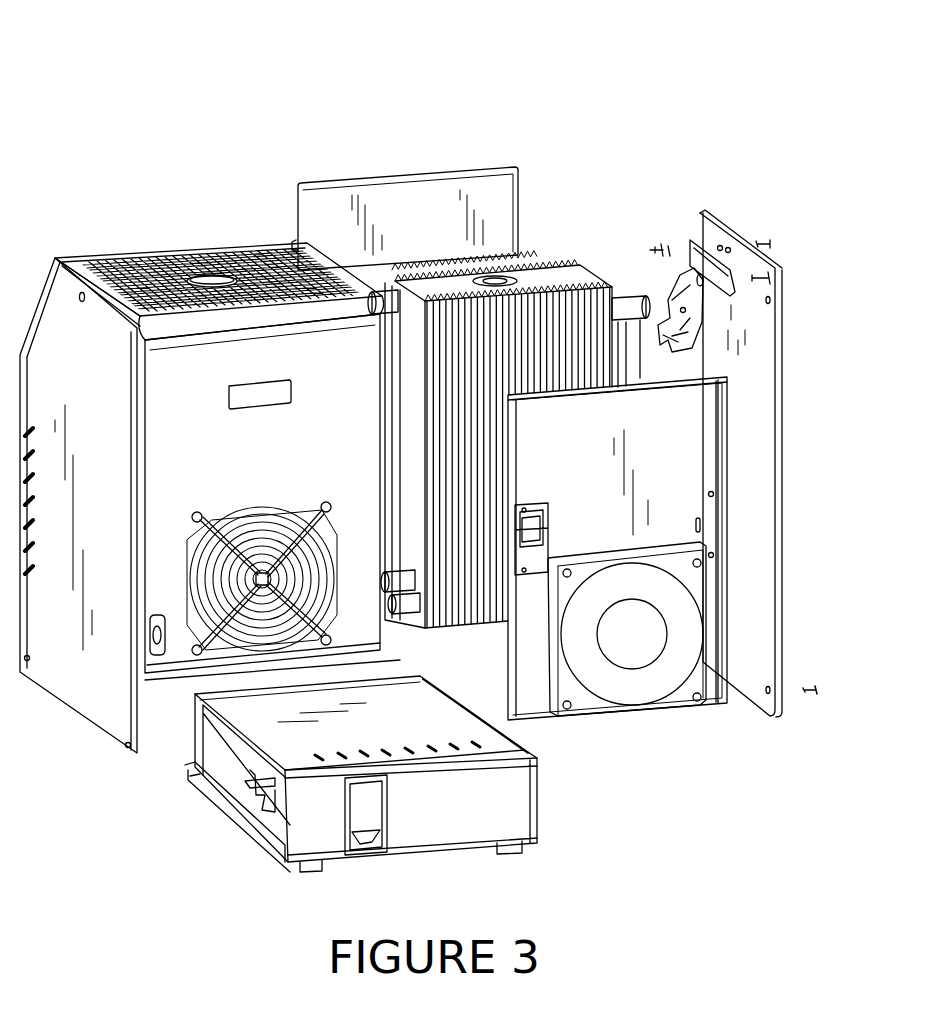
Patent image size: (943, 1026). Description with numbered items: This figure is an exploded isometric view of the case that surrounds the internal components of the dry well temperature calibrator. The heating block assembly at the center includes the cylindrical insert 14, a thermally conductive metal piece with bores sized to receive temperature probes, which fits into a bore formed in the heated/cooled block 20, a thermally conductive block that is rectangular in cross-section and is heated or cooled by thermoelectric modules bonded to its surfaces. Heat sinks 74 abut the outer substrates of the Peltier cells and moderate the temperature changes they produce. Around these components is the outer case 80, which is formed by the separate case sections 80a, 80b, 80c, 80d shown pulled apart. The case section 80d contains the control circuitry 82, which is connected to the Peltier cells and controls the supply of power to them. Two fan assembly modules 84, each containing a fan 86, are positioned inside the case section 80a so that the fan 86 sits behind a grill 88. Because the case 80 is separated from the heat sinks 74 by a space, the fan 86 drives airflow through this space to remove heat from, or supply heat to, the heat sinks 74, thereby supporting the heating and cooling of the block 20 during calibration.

The outer case 80 is at (206, 135).
The case section 80a is at (283, 465).
The case section 80b is at (437, 237).
The case section 80c is at (758, 479).
The case section 80d is at (403, 732).
The cylindrical insert 14 is at (528, 270).
The heated/cooled block 20 is at (543, 277).
The heat sinks 74 is at (557, 347).
The control circuitry 82 is at (258, 787).
The fan assembly modules 84 is at (658, 455).
The fan 86 is at (643, 653).
The grill 88 is at (224, 511).